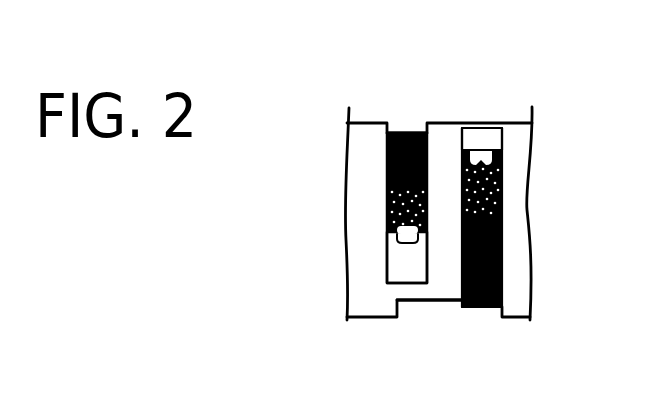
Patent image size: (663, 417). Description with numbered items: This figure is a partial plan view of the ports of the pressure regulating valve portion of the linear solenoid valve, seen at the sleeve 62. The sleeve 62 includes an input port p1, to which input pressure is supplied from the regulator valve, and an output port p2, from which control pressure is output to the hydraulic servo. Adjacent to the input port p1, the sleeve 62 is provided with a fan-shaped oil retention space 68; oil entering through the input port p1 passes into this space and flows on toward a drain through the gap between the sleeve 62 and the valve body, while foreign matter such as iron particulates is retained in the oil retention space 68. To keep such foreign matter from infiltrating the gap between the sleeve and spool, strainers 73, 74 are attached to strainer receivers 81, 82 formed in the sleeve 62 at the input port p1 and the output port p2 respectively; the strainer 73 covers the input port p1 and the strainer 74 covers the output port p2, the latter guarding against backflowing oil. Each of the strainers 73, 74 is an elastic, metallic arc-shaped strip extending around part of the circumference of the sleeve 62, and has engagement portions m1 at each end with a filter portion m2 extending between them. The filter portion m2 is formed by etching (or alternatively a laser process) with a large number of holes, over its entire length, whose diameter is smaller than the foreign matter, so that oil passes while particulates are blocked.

The sleeve 62 is at (517, 100).
The oil retention space 68 is at (438, 302).
The strainer 73 is at (513, 198).
The strainer 74 is at (407, 115).
The strainer receiver 81 is at (475, 133).
The strainer receiver 82 is at (403, 265).
The engagement portion m1 is at (387, 228).
The filter portion m2 is at (387, 188).
The input port p1 is at (477, 310).
The output port p2 is at (402, 131).